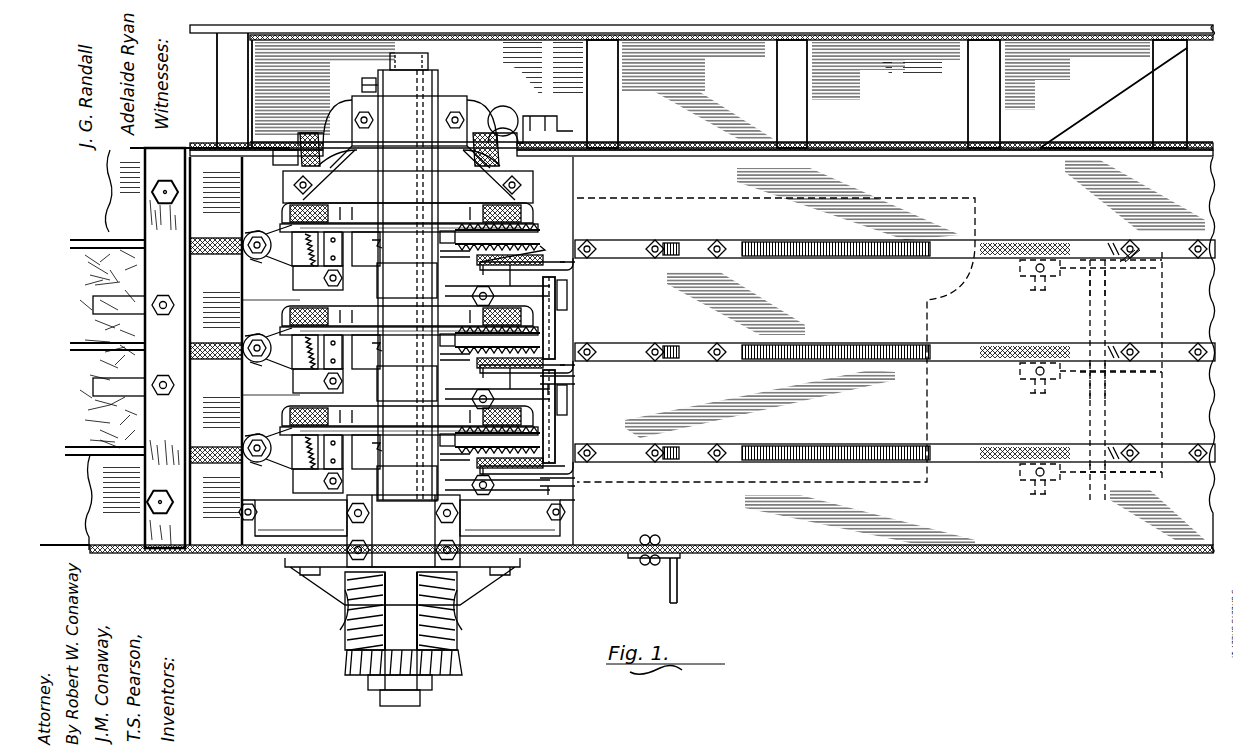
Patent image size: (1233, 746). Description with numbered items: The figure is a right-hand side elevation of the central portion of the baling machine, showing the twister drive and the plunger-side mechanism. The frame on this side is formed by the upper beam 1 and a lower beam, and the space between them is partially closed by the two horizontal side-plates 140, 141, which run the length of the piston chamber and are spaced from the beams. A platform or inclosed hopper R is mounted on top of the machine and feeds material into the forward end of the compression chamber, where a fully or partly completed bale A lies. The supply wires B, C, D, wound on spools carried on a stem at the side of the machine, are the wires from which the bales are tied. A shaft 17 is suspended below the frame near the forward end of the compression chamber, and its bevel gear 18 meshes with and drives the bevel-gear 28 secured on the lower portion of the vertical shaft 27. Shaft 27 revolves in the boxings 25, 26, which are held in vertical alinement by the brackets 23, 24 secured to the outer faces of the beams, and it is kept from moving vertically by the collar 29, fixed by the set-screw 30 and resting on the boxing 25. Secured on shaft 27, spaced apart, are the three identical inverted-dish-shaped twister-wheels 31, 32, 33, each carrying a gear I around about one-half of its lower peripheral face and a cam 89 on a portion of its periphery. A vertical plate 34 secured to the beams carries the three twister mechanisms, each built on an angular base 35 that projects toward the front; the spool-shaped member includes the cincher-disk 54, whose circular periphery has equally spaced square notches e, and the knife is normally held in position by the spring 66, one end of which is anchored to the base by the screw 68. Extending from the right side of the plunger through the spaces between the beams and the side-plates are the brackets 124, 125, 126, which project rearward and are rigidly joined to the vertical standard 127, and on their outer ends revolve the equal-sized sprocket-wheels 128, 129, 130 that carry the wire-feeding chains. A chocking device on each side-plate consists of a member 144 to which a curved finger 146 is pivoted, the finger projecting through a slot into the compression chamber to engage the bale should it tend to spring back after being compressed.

The upper right beam 1 is at (652, 373).
The shaft 17 is at (466, 605).
The bevel gear 18 is at (345, 628).
The bracket 23 is at (522, 125).
The bracket 24 is at (407, 518).
The boxing 25 is at (395, 148).
The boxing 26 is at (403, 531).
The shaft 27 is at (430, 60).
The bevel-gear 28 is at (345, 676).
The collar 29 is at (440, 80).
The set-screw 30 is at (360, 85).
The twister-wheel 31 is at (407, 213).
The twister-wheel 32 is at (407, 316).
The twister-wheel 33 is at (407, 416).
The plate 34 is at (271, 348).
The angular base 35 is at (267, 347).
The cincher-disk 54 is at (364, 366).
The spring 66 is at (300, 345).
The screw 68 is at (300, 270).
The cam 89 is at (430, 230).
The bracket 124 is at (598, 270).
The bracket 125 is at (600, 372).
The bracket 126 is at (600, 476).
The vertical standard 127 is at (560, 335).
The sprocket-wheel 128 is at (548, 246).
The sprocket-wheel 129 is at (572, 378).
The sprocket-wheel 130 is at (526, 480).
The side-plate 140 is at (895, 300).
The side-plate 141 is at (895, 403).
The member 144 is at (570, 298).
The finger 146 is at (455, 295).
The hopper R is at (702, 19).
The bale A is at (108, 400).
The supply wire B is at (103, 199).
The supply wire C is at (103, 323).
The supply wire D is at (96, 416).
The gear I is at (490, 333).
The square notch e is at (369, 343).